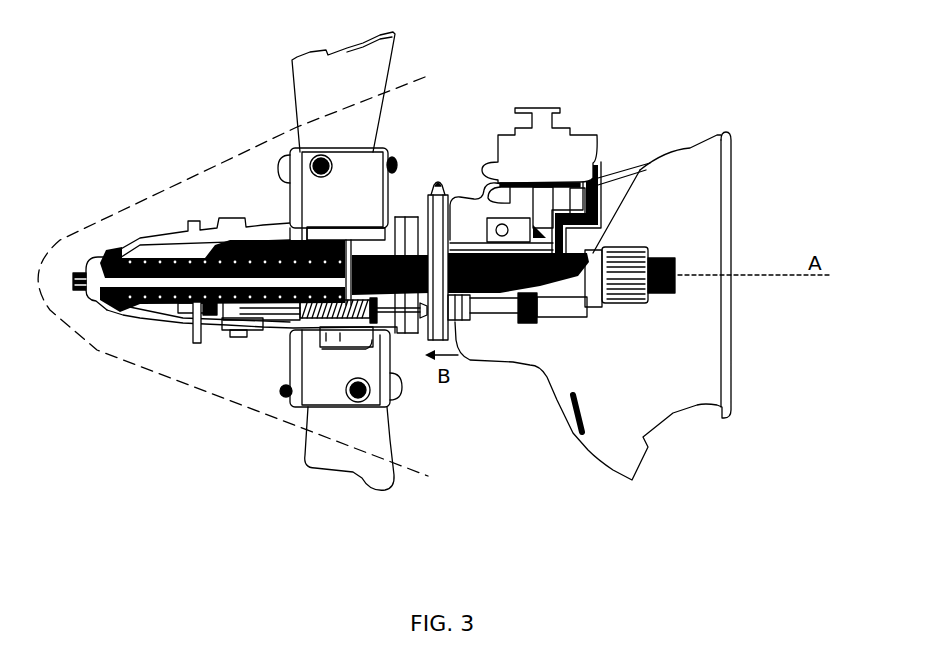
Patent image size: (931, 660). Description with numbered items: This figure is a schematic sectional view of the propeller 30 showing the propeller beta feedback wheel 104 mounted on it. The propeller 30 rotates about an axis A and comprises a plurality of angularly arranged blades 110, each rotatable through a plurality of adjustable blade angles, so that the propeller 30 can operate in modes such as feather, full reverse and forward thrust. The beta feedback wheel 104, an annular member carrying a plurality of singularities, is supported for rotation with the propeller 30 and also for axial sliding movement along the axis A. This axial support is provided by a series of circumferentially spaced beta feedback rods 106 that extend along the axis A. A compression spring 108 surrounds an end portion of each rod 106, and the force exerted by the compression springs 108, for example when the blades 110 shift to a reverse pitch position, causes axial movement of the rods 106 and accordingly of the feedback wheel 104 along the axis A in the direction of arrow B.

The propeller 30 is at (143, 93).
The beta feedback wheel 104 is at (439, 183).
The beta feedback rod 106 is at (390, 318).
The compression spring 108 is at (307, 317).
The blade 110 is at (284, 56).